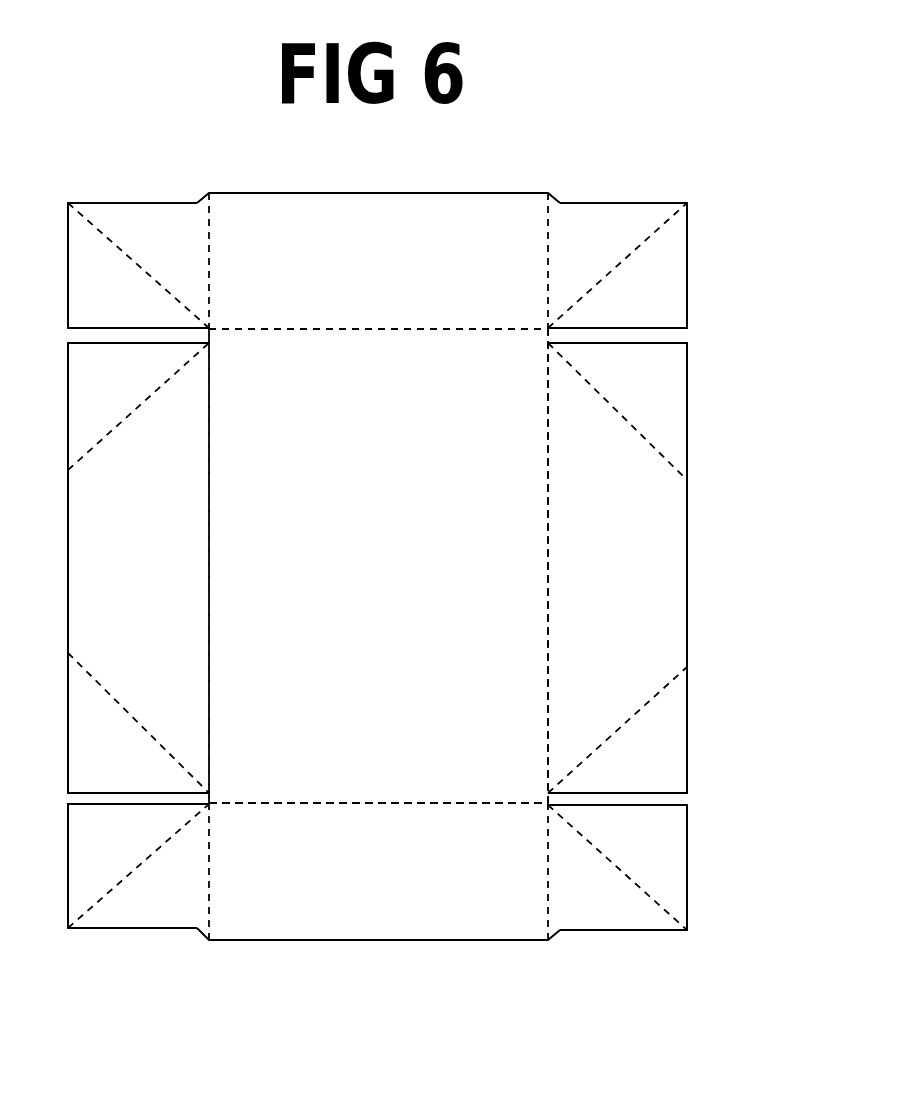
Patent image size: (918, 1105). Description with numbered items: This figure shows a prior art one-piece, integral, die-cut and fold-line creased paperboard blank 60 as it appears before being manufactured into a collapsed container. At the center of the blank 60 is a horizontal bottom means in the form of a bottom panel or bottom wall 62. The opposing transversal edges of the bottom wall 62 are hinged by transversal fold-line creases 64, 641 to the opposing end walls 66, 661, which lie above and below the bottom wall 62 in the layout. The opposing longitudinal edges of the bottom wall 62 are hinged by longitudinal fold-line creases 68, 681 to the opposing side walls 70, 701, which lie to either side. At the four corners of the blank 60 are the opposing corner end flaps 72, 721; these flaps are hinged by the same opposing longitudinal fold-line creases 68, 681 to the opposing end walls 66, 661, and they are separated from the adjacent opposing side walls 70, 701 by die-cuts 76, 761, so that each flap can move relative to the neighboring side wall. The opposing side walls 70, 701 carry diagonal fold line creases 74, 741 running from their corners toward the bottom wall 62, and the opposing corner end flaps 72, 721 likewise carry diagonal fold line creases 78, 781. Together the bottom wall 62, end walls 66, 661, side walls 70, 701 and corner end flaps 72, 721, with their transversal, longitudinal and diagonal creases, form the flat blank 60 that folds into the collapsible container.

The paperboard blank 60 is at (700, 568).
The bottom panel 62 is at (378, 566).
The transversal fold-line crease 64 is at (280, 805).
The transversal fold-line crease 641 is at (280, 330).
The end wall 66 is at (378, 871).
The end wall 661 is at (378, 261).
The longitudinal fold-line crease 68 is at (547, 628).
The longitudinal fold-line crease 681 is at (208, 620).
The side wall 70 is at (617, 568).
The side wall 701 is at (138, 568).
The corner end flap 72 is at (617, 566).
The corner end flap 721 is at (138, 565).
The diagonal fold line crease 74 is at (658, 453).
The diagonal fold line crease 741 is at (117, 427).
The die-cut 76 is at (610, 337).
The die-cut 761 is at (83, 335).
The diagonal fold line crease 78 is at (613, 270).
The diagonal fold line crease 781 is at (143, 270).